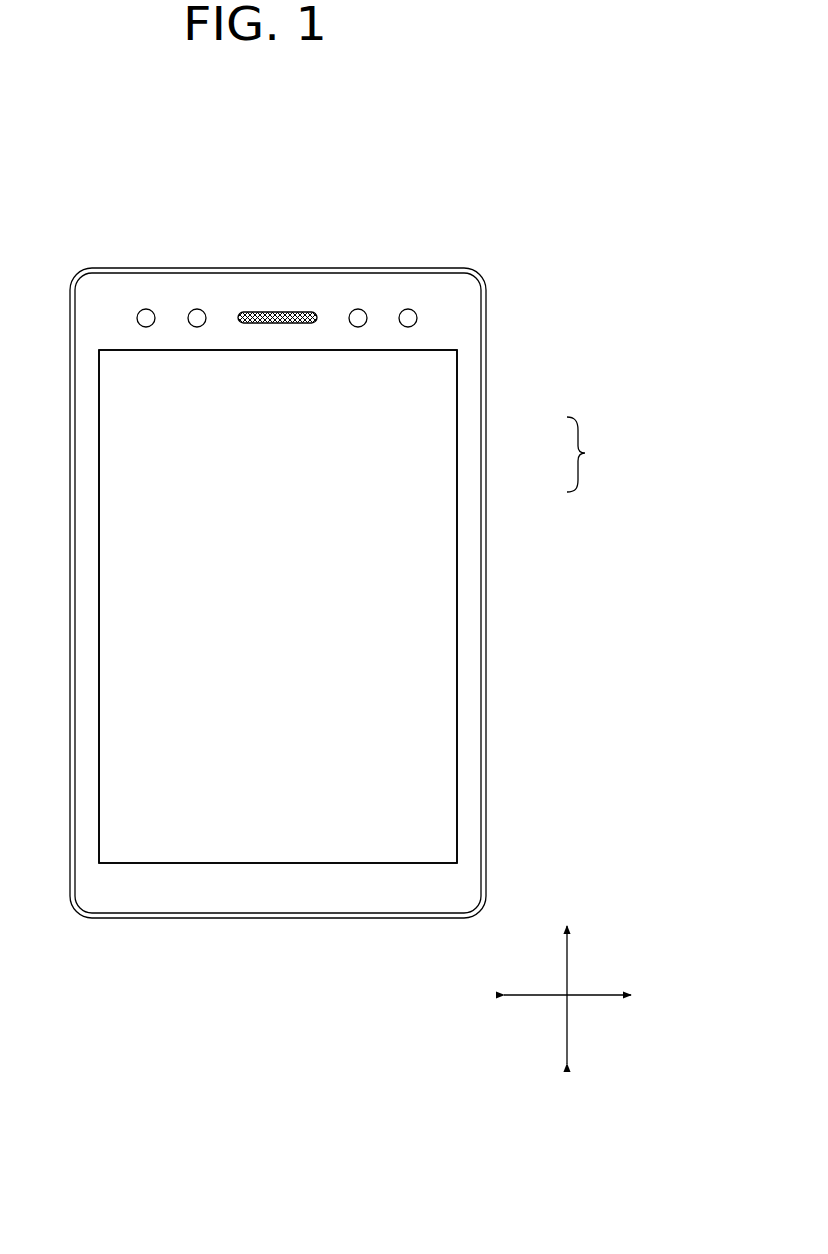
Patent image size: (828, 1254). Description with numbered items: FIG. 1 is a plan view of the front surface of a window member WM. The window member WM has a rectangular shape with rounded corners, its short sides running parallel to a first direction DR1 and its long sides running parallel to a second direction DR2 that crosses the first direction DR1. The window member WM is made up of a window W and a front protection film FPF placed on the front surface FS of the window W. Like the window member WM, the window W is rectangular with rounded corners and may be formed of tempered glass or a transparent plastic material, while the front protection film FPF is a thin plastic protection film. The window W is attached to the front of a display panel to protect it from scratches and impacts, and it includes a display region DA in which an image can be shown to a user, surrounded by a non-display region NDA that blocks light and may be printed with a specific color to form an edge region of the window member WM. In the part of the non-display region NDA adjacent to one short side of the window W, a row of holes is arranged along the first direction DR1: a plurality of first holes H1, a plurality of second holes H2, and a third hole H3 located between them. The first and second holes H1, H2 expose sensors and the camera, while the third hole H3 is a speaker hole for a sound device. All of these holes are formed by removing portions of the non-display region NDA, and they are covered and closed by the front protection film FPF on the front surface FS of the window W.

The window member WM is at (472, 209).
The front protection film FPF is at (486, 371).
The display region DA is at (437, 477).
The non-display region NDA is at (465, 437).
The window W is at (585, 454).
The front surface FS is at (442, 589).
The first holes H1 is at (407, 309).
The second holes H2 is at (196, 309).
The third hole H3 is at (276, 305).
The first direction DR1 is at (589, 995).
The second direction DR2 is at (567, 978).